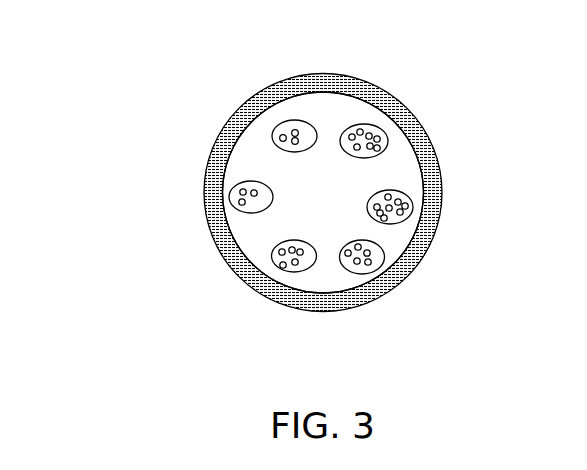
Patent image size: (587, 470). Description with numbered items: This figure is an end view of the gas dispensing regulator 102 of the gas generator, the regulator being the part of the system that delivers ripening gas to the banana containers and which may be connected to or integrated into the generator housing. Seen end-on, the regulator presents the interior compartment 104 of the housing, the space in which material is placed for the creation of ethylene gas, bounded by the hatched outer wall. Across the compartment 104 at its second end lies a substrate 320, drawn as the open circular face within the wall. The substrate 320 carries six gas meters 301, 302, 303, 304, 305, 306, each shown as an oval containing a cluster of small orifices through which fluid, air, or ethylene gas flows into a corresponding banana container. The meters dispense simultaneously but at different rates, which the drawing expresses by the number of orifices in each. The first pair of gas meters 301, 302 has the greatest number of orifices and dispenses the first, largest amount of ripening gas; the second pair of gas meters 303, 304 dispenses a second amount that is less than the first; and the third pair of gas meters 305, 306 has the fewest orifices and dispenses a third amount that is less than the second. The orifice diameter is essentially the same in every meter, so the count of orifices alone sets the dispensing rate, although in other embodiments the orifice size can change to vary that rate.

The gas dispensing regulator 102 is at (100, 130).
The interior compartment 104 is at (318, 176).
The substrate 320 is at (292, 178).
The gas meter 301 is at (383, 130).
The gas meter 302 is at (407, 200).
The gas meter 303 is at (384, 258).
The gas meter 304 is at (272, 258).
The gas meter 305 is at (229, 197).
The gas meter 306 is at (283, 128).